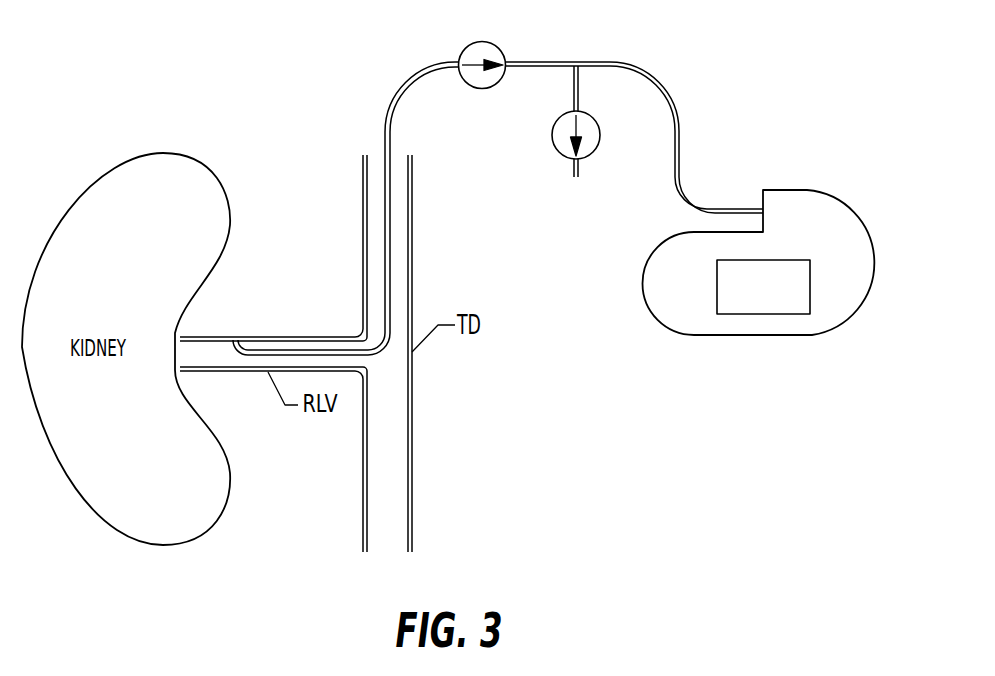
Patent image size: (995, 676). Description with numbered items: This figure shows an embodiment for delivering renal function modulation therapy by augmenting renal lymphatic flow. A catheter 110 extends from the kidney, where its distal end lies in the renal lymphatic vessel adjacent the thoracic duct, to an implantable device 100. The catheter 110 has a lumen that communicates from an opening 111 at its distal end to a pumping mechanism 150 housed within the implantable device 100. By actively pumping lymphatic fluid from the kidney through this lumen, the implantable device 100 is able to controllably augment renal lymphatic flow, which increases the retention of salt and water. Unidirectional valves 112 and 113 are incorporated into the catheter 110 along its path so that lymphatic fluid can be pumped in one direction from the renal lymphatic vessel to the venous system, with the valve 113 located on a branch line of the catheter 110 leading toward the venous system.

The implantable device 100 is at (807, 189).
The catheter 110 is at (656, 80).
The opening 111 is at (233, 337).
The unidirectional valve 112 is at (468, 42).
The unidirectional valve 113 is at (553, 150).
The pumping mechanism 150 is at (764, 259).